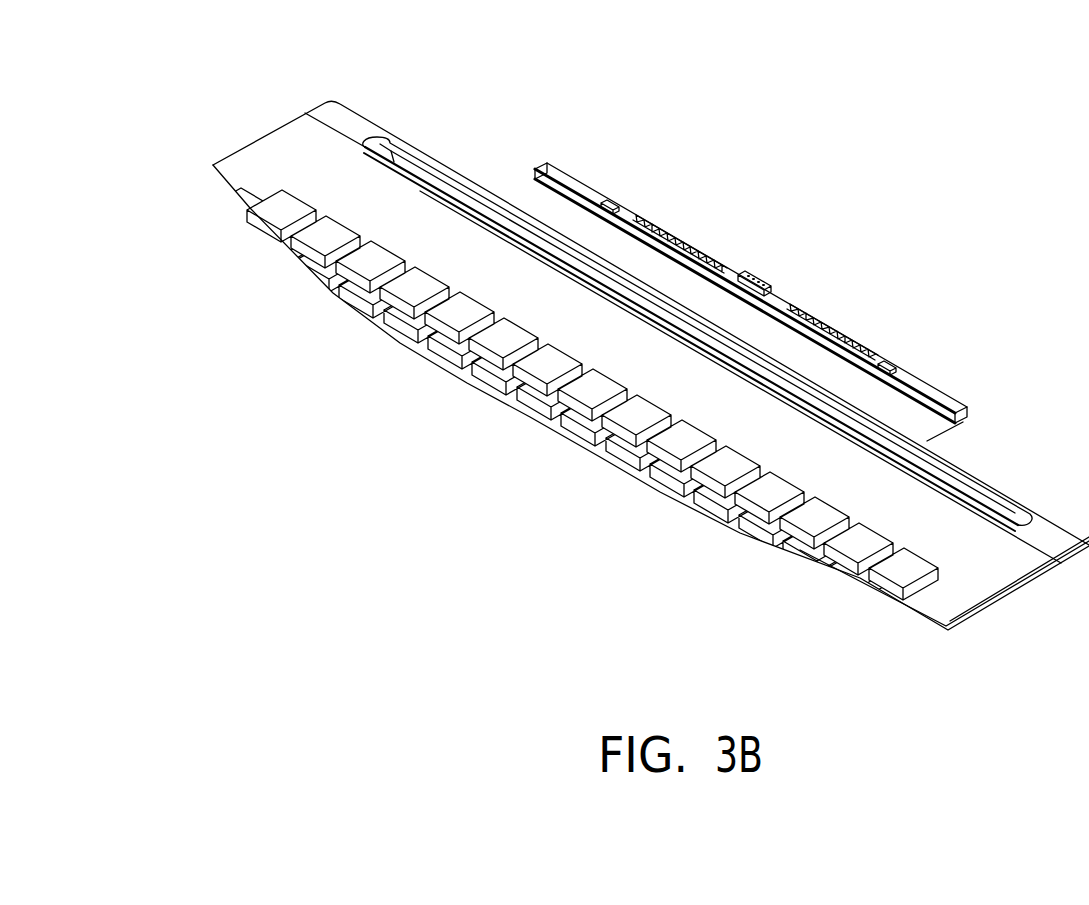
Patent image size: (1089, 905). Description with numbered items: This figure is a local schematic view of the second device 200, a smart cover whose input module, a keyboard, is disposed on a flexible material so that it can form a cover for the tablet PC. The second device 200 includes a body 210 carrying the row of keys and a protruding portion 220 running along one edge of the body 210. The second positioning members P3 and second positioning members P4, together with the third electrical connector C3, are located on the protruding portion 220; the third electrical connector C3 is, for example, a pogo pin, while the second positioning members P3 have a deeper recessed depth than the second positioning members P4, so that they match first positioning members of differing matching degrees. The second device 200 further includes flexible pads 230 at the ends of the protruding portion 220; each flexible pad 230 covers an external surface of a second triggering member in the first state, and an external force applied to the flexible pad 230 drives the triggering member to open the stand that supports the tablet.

The second device 200 is at (482, 46).
The body 210 is at (353, 122).
The protruding portion 220 is at (540, 197).
The flexible pad 230 is at (576, 184).
The second positioning member P3 is at (611, 203).
The second positioning member P4 is at (722, 260).
The third electrical connector C3 is at (773, 291).